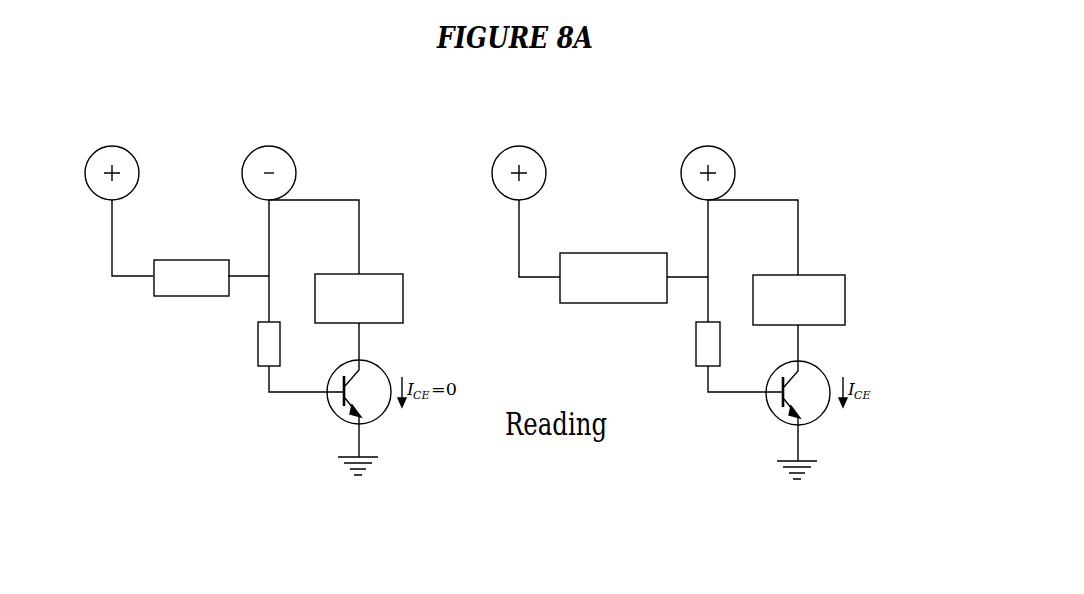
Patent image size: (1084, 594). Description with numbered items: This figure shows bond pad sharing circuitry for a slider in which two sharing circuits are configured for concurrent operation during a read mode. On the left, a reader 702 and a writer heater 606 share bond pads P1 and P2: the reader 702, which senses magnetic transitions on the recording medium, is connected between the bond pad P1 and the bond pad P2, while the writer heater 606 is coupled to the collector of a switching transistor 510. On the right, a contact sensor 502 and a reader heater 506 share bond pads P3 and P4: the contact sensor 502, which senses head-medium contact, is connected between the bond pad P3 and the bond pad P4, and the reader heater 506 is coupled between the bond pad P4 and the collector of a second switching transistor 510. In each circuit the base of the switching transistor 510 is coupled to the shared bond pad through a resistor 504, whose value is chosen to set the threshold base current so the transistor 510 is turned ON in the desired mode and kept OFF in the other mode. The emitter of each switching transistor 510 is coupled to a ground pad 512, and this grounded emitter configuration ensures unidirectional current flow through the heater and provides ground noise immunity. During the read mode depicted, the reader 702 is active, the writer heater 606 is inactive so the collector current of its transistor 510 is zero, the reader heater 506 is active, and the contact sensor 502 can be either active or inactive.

The reader 702 is at (190, 259).
The resistor 504 is at (258, 344).
The writer heater 606 is at (403, 300).
The switching transistor 510 is at (380, 368).
The ground pad 512 is at (338, 467).
The contact sensor 502 is at (626, 252).
The reader heater 506 is at (845, 300).
The bond pad P1 is at (139, 170).
The bond pad P2 is at (296, 170).
The bond pad P3 is at (546, 170).
The bond pad P4 is at (735, 170).